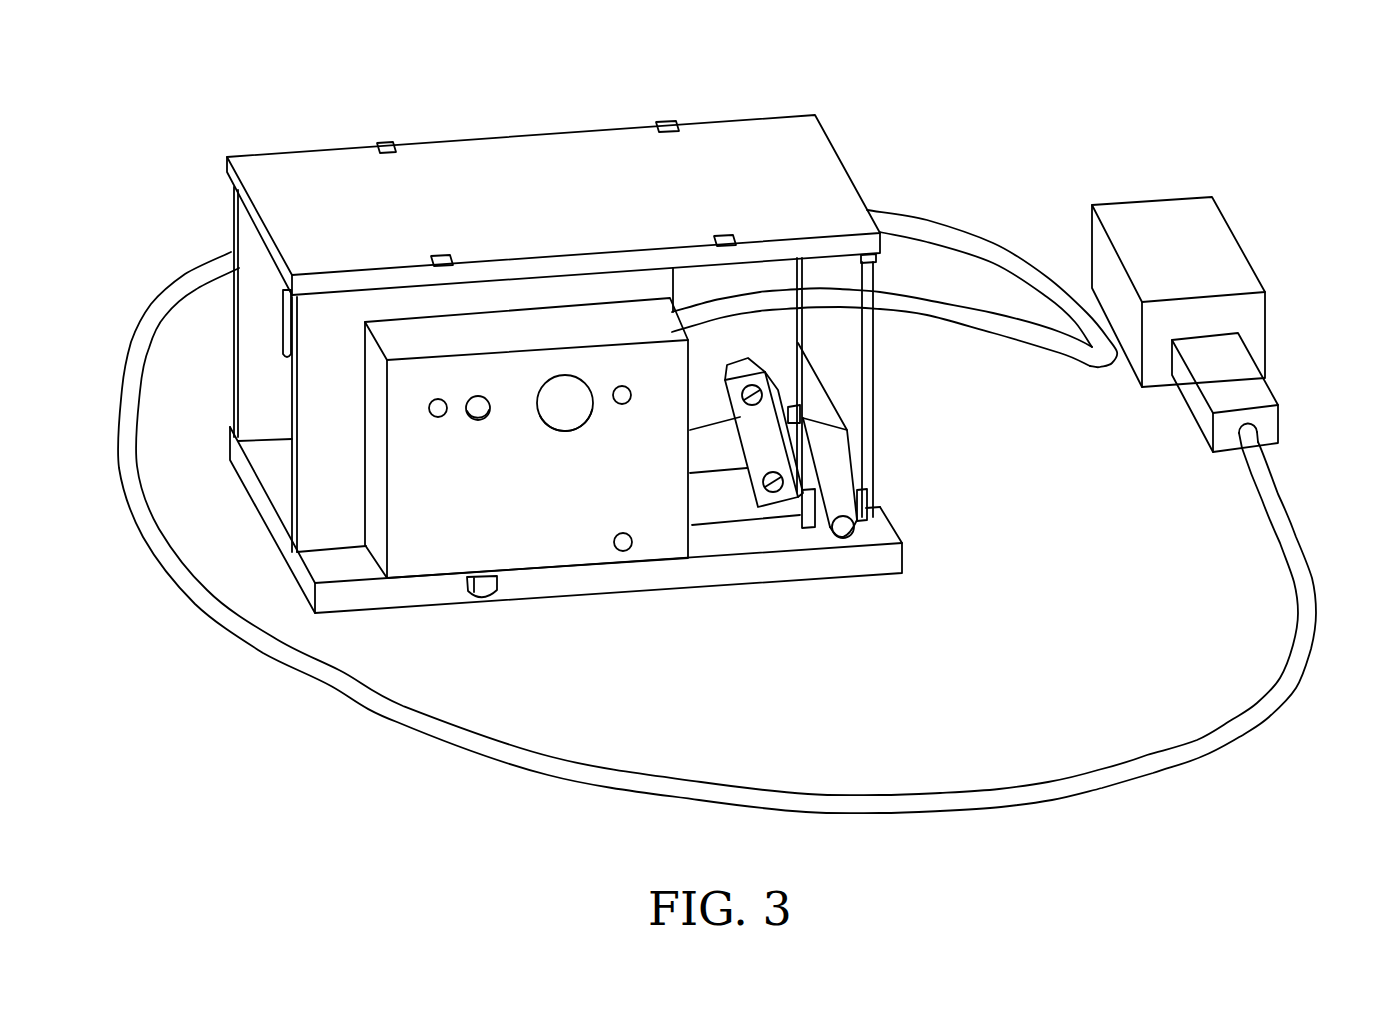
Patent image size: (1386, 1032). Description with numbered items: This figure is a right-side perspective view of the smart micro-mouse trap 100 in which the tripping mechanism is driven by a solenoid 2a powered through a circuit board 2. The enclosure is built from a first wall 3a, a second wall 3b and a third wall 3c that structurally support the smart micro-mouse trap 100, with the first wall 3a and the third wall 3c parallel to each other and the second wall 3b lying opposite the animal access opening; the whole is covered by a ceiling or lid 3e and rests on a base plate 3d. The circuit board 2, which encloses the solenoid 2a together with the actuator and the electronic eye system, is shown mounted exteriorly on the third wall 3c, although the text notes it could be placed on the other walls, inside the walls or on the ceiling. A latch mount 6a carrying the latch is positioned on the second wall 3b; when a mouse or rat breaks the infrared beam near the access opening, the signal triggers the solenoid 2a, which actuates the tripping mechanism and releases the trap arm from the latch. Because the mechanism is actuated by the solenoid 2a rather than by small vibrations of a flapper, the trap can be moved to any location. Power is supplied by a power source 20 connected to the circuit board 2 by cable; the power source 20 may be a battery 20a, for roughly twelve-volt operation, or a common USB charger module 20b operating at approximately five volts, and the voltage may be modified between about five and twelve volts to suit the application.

The smart micro-mouse trap 100 is at (286, 57).
The circuit board 2 is at (428, 540).
The solenoid 2a is at (717, 452).
The first wall 3a is at (260, 302).
The second wall 3b is at (873, 390).
The third wall 3c is at (330, 385).
The base plate 3d is at (587, 582).
The lid 3e is at (528, 160).
The latch mount 6a is at (838, 483).
The power source 20 is at (1287, 168).
The battery 20a is at (1172, 225).
The USB charger module 20b is at (1235, 363).